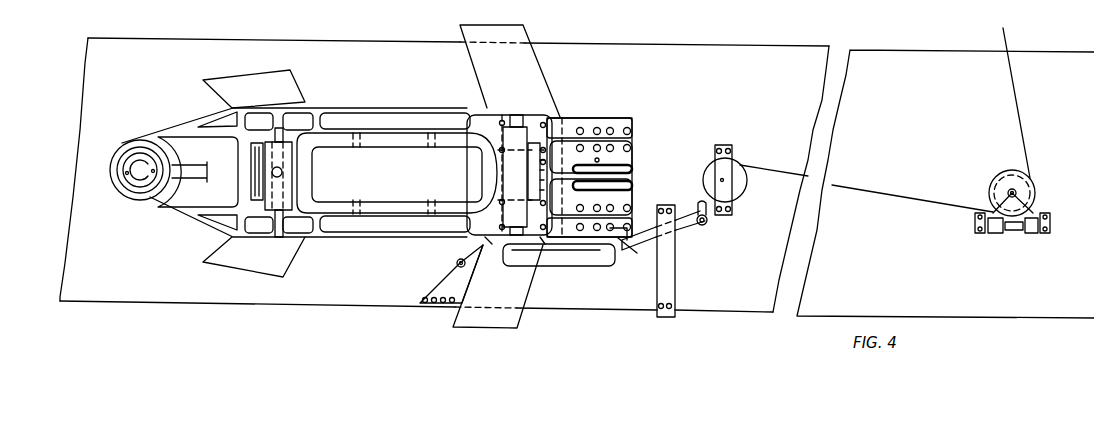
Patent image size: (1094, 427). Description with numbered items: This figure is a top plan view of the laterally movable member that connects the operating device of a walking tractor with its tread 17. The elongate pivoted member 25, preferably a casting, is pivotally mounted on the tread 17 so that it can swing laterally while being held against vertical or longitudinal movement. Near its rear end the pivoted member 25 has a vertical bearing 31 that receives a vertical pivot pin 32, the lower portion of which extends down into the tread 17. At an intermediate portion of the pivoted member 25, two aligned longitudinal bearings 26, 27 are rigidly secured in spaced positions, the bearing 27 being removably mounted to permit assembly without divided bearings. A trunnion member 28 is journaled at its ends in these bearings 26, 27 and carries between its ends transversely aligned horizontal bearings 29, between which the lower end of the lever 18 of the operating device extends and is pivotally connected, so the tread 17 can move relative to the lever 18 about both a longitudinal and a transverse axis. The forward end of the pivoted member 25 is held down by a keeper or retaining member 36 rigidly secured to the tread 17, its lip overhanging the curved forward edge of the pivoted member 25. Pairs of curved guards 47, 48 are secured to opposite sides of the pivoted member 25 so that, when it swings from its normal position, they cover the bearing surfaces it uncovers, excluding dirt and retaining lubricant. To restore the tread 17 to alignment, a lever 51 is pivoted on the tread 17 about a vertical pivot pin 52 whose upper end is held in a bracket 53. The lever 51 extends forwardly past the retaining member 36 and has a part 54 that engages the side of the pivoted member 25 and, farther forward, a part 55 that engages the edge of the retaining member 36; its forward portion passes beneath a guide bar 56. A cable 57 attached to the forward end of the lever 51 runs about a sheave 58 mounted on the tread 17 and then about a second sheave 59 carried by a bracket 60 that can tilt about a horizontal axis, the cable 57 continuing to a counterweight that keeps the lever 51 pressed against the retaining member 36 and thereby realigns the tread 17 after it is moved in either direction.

The tread 17 is at (333, 272).
The lever 18 is at (725, 424).
The elongate member 25 is at (352, 237).
The bearing 26 is at (281, 143).
The bearing 27 is at (520, 128).
The trunnion member 28 is at (302, 195).
The horizontal bearings 29 is at (366, 141).
The vertical bearing 31 is at (145, 190).
The vertical pivot pin 32 is at (125, 182).
The retaining member 36 is at (621, 118).
The guard 47 is at (528, 66).
The guard 48 is at (282, 80).
The lever 51 is at (594, 260).
The pivot pin 52 is at (457, 264).
The bracket 53 is at (443, 281).
The part 54 is at (498, 247).
The part 55 is at (624, 242).
The guide bar 56 is at (674, 250).
The cable 57 is at (757, 165).
The sheave 58 is at (746, 186).
The second sheave 59 is at (1025, 186).
The bracket 60 is at (1020, 206).